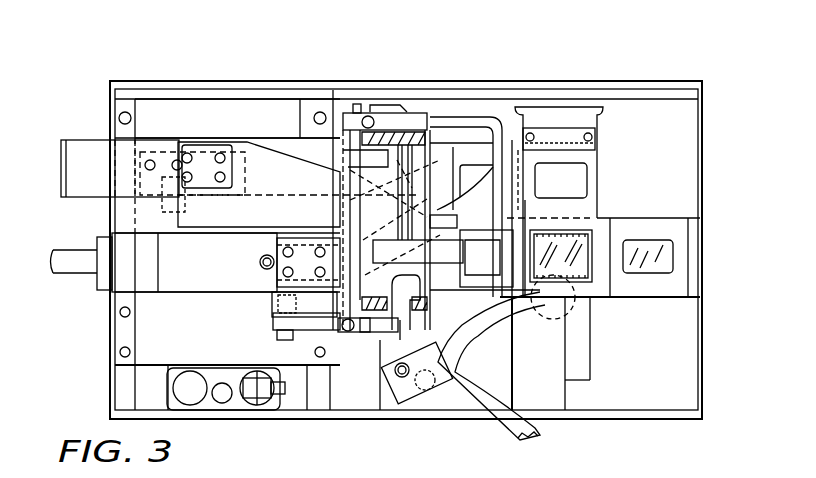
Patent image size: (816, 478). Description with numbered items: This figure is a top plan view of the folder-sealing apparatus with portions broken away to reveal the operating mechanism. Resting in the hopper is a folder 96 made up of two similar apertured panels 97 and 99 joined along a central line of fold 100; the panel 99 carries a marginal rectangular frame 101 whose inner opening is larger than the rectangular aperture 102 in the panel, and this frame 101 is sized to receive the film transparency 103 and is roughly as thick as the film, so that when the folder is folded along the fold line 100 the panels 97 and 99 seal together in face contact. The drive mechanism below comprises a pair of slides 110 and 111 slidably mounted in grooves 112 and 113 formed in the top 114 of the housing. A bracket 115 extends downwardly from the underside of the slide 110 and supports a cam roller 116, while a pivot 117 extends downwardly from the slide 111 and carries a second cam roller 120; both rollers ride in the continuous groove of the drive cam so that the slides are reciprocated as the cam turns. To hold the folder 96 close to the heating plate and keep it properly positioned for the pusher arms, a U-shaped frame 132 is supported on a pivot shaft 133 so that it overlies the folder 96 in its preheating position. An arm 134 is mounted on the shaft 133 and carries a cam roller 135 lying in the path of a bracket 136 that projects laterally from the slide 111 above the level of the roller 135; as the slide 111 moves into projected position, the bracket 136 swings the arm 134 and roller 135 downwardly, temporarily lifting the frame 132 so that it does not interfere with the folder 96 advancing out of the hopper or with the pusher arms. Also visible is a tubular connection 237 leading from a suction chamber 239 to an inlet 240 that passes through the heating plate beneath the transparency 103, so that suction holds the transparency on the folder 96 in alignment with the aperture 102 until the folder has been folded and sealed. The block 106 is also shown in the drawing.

The folder 96 is at (598, 181).
The apertured panel 97 is at (588, 167).
The apertured panel 99 is at (587, 290).
The central line of fold 100 is at (580, 217).
The marginal rectangular frame 101 is at (522, 300).
The rectangular aperture 102 is at (592, 245).
The film transparency 103 is at (555, 285).
The block 106 is at (365, 156).
The slide 110 is at (93, 153).
The slide 111 is at (187, 280).
The groove 112 is at (288, 137).
The groove 113 is at (200, 287).
The top of the housing 114 is at (207, 343).
The bracket 115 is at (167, 180).
The cam roller 116 is at (188, 205).
The pivot 117 is at (257, 258).
The cam roller 120 is at (268, 253).
The U-shaped frame 132 is at (468, 122).
The pivot shaft 133 is at (356, 112).
The arm 134 is at (348, 335).
The cam roller 135 is at (270, 310).
The bracket 136 is at (298, 293).
The tubular connection 237 is at (455, 340).
The suction chamber 239 is at (403, 385).
The inlet 240 is at (538, 330).